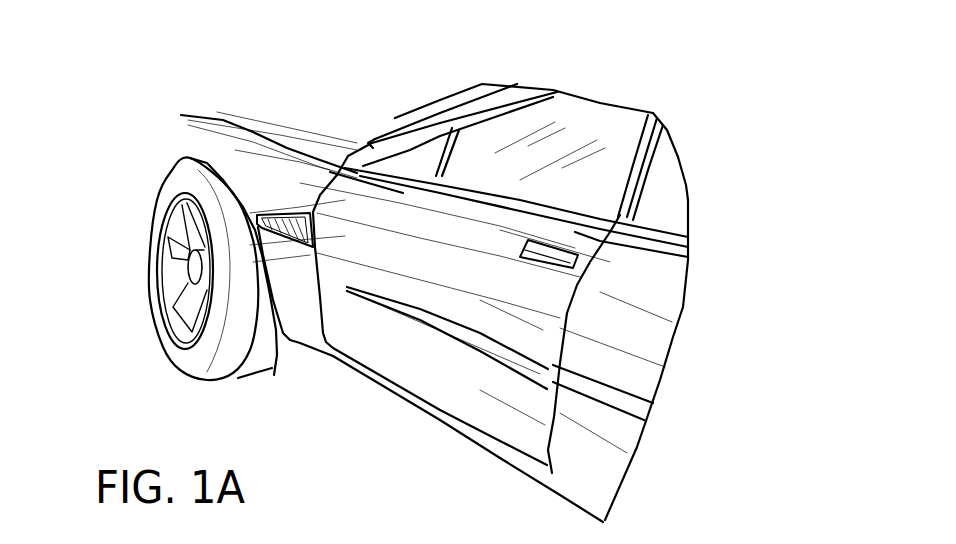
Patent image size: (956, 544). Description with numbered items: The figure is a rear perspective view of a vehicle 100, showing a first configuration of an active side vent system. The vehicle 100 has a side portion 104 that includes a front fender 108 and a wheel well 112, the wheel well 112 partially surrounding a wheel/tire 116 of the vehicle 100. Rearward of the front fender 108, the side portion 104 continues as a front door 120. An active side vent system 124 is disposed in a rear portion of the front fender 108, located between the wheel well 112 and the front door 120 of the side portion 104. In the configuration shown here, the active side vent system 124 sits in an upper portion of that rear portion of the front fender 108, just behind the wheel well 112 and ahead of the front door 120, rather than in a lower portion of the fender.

The vehicle 100 is at (163, 92).
The side portion 104 is at (470, 445).
The front fender 108 is at (288, 180).
The wheel well 112 is at (186, 161).
The wheel/tire 116 is at (158, 312).
The front door 120 is at (377, 357).
The active side vent system 124 is at (272, 366).